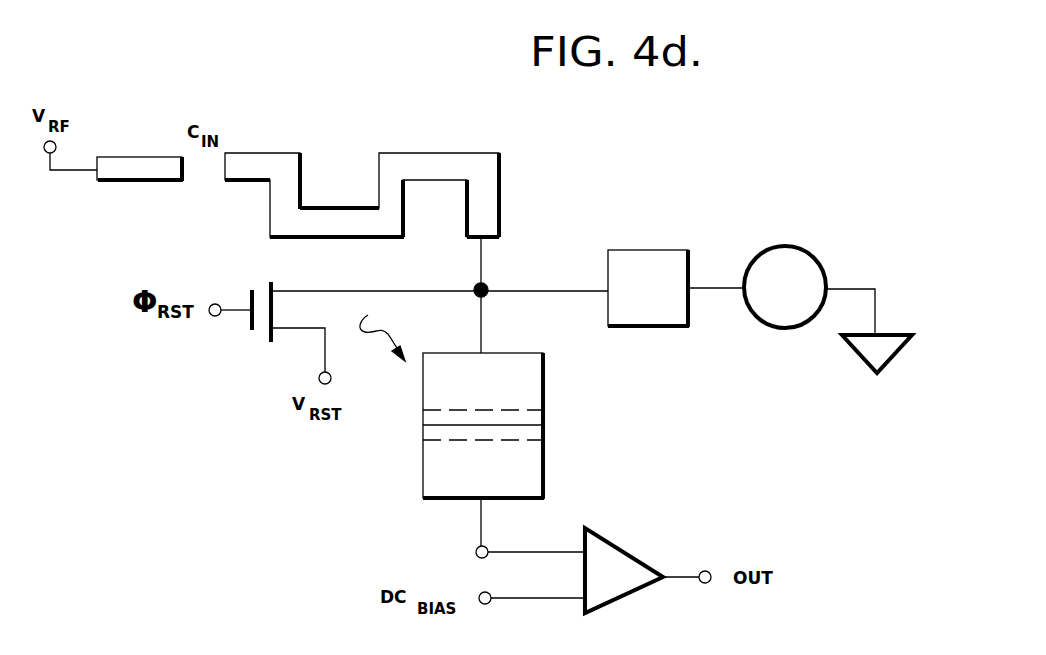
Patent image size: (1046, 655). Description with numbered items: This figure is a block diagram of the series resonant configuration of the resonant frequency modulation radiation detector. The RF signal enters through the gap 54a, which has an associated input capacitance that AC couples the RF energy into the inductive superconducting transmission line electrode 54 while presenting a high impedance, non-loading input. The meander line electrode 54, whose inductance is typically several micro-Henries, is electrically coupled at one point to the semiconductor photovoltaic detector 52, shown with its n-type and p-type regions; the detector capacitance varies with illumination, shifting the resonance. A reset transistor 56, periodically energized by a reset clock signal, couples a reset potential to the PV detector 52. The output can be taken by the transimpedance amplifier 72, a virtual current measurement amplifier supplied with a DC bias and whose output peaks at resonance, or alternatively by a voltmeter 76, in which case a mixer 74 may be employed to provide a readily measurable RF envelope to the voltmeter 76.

The semiconductor photovoltaic (PV) detector 52 is at (552, 417).
The inductive superconducting transmission line electrode 54 is at (298, 153).
The gap 54a is at (207, 178).
The reset transistor 56 is at (268, 338).
The Transimpedance Amplifier (TIA) 72 is at (612, 603).
The Mixer (M) 74 is at (686, 250).
The Voltmeter (VM) 76 is at (822, 260).